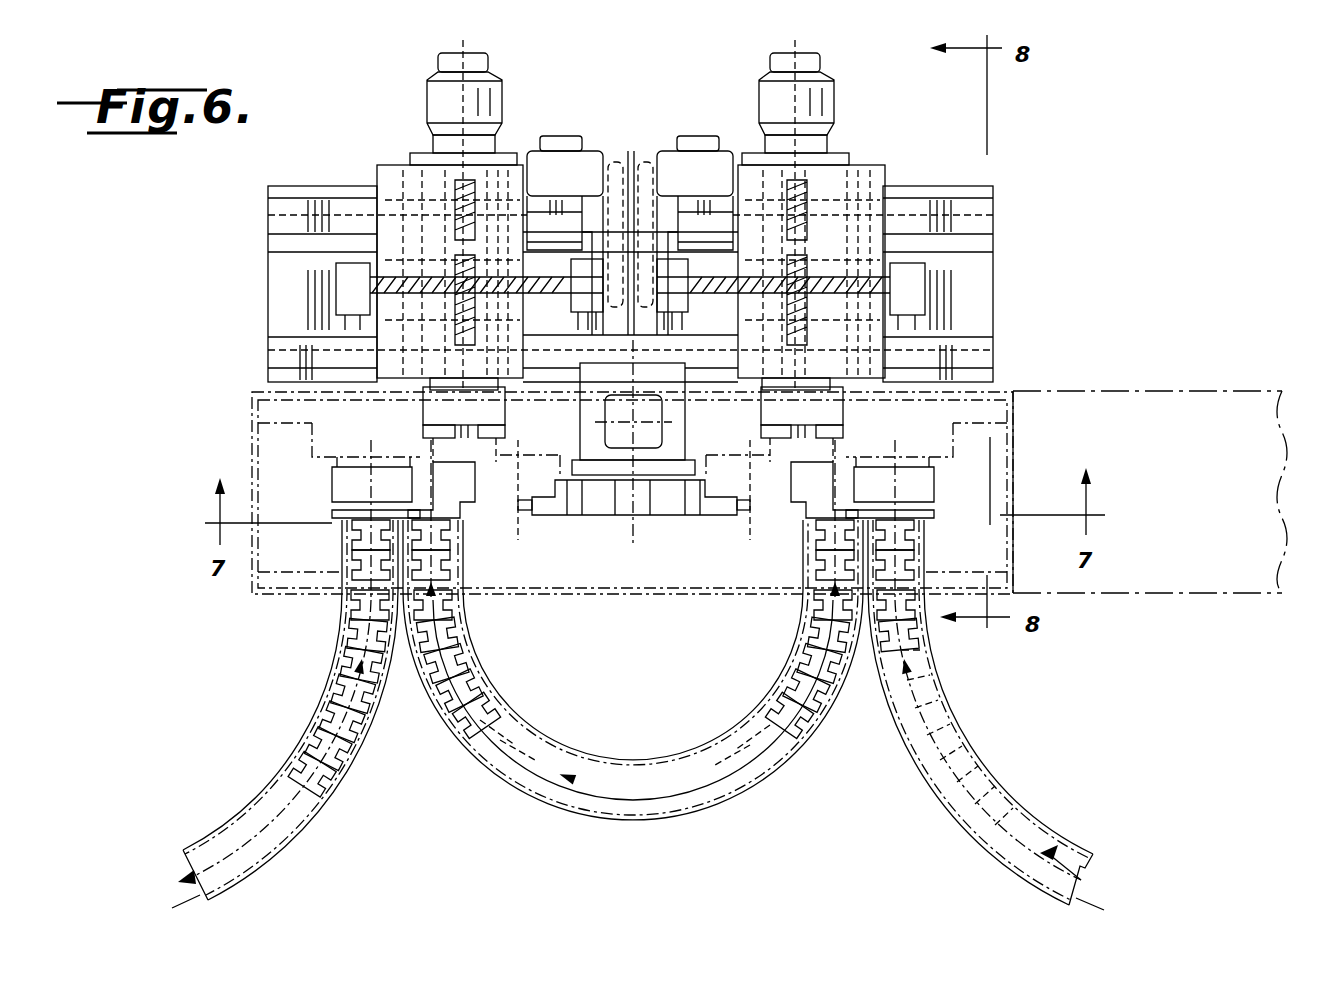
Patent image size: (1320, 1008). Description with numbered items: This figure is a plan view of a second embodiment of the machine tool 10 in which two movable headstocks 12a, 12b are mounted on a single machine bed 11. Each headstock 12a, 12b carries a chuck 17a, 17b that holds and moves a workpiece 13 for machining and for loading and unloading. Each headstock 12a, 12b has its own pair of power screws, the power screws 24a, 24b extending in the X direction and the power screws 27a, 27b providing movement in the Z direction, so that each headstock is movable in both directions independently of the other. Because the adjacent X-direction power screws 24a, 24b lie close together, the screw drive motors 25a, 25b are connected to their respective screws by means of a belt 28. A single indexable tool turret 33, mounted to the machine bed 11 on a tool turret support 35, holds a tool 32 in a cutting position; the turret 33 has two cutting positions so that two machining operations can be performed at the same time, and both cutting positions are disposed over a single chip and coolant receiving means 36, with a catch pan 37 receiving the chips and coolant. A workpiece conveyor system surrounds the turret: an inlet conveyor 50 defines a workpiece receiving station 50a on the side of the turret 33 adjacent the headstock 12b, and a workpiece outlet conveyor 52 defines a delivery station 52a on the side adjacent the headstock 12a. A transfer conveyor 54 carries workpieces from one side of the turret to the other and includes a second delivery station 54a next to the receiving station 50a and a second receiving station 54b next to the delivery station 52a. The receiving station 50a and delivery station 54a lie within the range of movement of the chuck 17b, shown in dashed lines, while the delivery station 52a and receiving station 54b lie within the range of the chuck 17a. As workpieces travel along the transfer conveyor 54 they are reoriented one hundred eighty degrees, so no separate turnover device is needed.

The machine tool 10 is at (1025, 148).
The machine bed 11 is at (980, 268).
The headstock 12a is at (430, 174).
The headstock 12b is at (845, 180).
The workpiece 13 is at (348, 667).
The chuck 17a is at (425, 412).
The chuck 17b is at (838, 411).
The power screw 24a is at (537, 277).
The power screw 24b is at (710, 278).
The screw drive motor 25a is at (590, 148).
The screw drive motor 25b is at (700, 146).
The power screw 27a is at (452, 318).
The power screw 27b is at (830, 318).
The belt 28 is at (645, 165).
The tool 32 is at (527, 506).
The tool turret 33 is at (600, 513).
The tool turret support 35 is at (590, 420).
The chip and coolant receiving means 36 is at (1022, 440).
The catch pan 37 is at (250, 455).
The inlet conveyor 50 is at (1055, 824).
The workpiece receiving station 50a is at (928, 535).
The workpiece outlet conveyor 52 is at (217, 826).
The delivery station 52a is at (342, 548).
The transfer conveyor 54 is at (634, 756).
The second delivery station 54a is at (800, 547).
The second receiving station 54b is at (466, 547).